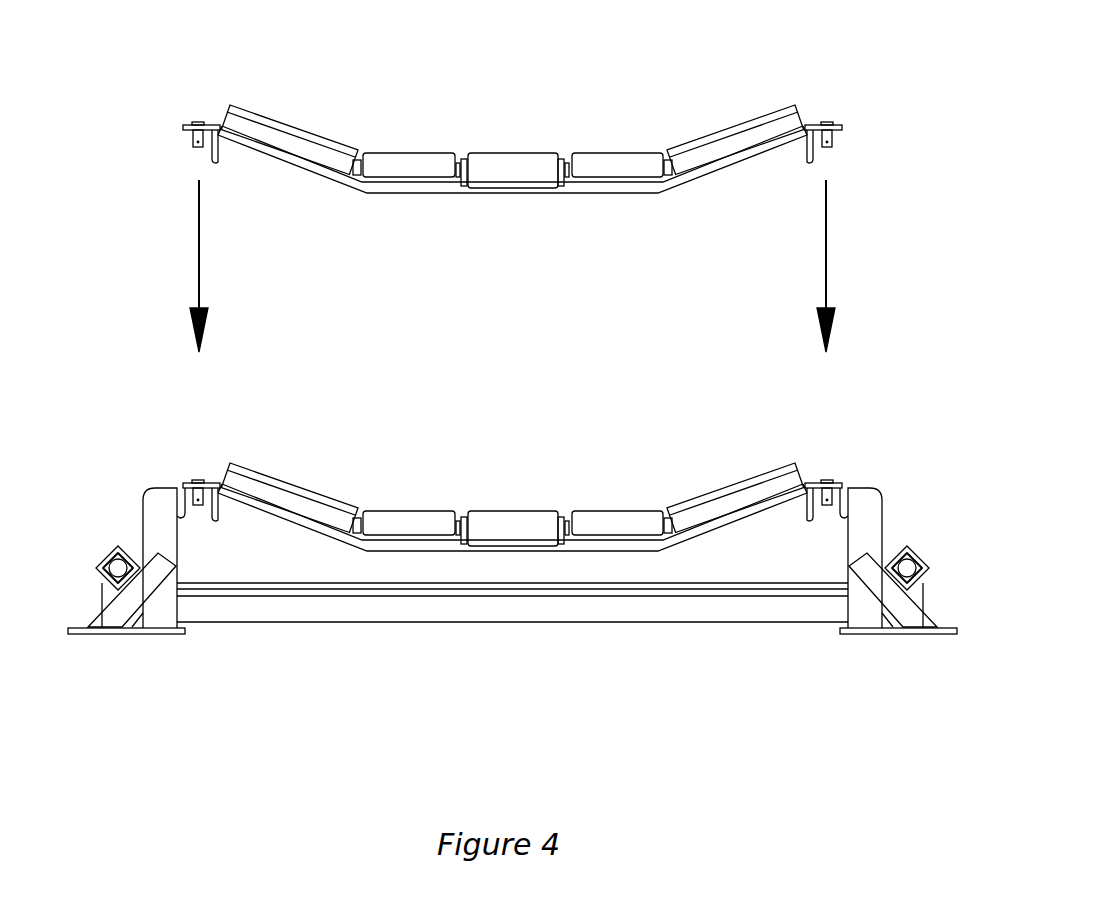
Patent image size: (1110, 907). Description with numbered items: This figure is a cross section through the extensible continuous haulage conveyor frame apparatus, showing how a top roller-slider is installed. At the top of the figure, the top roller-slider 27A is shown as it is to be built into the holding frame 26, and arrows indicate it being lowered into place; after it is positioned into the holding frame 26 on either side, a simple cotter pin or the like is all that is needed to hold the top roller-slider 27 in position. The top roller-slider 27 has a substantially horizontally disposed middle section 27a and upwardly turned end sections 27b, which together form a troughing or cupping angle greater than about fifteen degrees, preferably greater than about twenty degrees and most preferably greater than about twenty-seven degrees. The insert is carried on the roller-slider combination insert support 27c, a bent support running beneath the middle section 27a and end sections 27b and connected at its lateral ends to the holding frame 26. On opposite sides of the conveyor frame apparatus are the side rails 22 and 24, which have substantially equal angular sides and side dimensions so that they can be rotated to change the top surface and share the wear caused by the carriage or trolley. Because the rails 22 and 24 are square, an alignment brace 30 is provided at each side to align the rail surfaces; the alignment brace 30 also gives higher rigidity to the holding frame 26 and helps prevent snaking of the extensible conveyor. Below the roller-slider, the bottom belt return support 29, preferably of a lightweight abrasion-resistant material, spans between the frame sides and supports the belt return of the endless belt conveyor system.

The top roller-slider 27A is at (515, 113).
The top roller-slider 27 is at (553, 398).
The middle section 27a is at (543, 460).
The end sections 27b is at (328, 447).
The roller-slider combination insert support 27c is at (704, 535).
The side rail 22 is at (102, 560).
The side rail 24 is at (930, 560).
The holding frame 26 is at (143, 513).
The bottom belt return support 29 is at (333, 585).
The alignment brace 30 is at (133, 615).